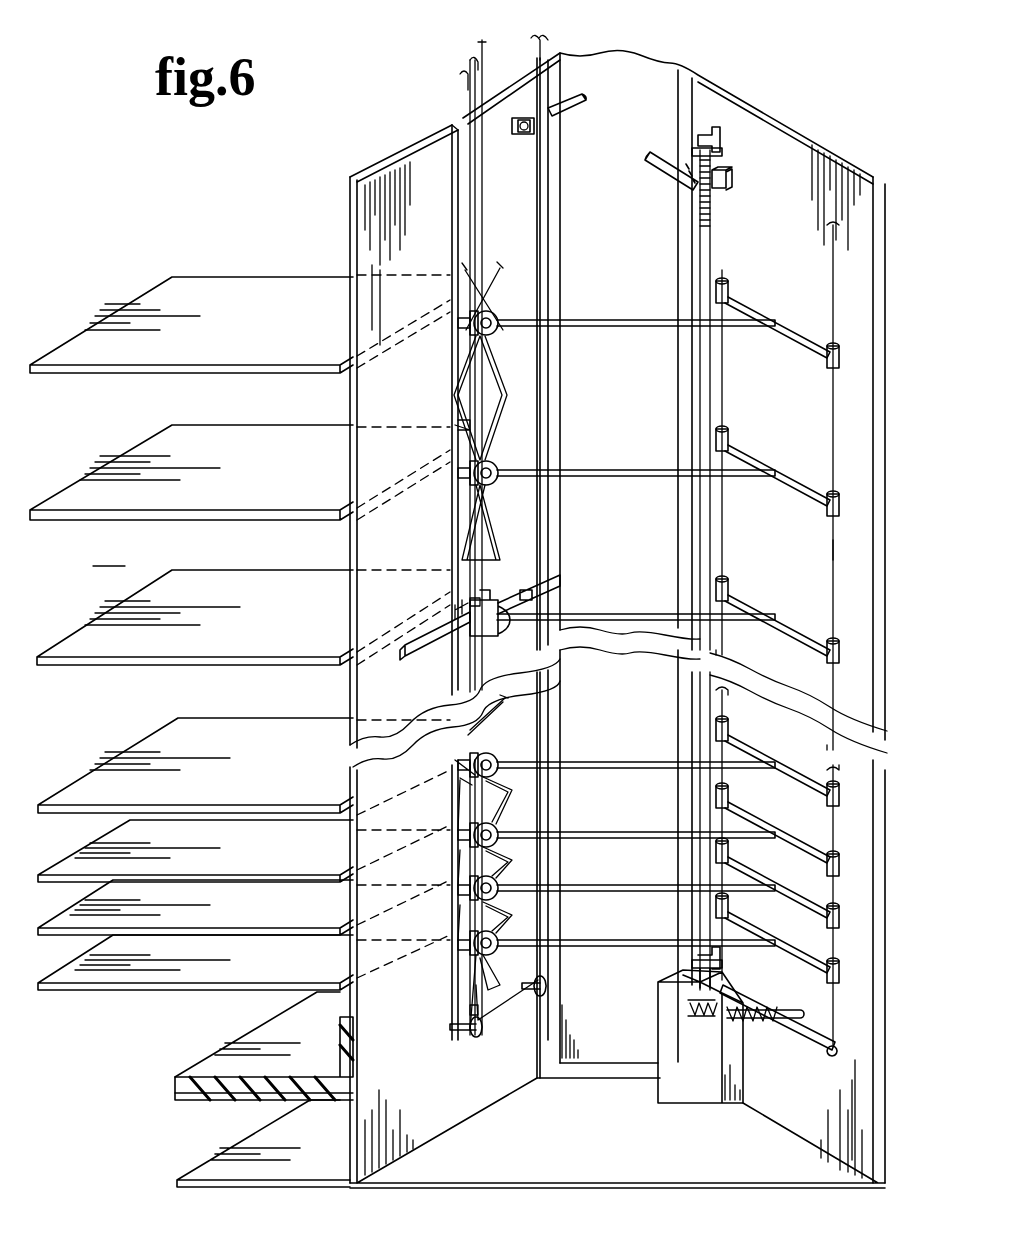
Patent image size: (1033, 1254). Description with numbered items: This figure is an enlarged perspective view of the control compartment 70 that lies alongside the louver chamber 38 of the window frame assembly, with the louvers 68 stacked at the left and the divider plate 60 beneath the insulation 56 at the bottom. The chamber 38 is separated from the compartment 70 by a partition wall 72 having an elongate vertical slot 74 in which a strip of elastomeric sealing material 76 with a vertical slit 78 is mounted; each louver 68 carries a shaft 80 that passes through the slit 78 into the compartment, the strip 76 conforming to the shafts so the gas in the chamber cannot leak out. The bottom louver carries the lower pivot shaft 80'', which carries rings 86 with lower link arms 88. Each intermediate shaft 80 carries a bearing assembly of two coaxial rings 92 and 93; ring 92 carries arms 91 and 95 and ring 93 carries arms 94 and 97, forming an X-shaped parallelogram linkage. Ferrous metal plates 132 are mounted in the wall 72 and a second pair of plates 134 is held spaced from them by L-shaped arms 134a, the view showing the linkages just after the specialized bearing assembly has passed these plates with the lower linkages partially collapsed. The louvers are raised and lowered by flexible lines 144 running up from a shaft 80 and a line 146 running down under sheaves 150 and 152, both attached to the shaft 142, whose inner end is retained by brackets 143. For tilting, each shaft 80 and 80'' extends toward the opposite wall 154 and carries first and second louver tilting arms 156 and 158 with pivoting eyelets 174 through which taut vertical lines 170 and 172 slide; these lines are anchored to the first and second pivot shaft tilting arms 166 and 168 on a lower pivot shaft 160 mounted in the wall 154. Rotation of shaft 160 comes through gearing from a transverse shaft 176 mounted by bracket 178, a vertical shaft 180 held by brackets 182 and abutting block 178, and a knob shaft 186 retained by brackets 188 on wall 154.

The chamber 38 is at (109, 556).
The insulation 56 is at (175, 1085).
The divider plate 60 is at (198, 1100).
The louvers 68 is at (180, 300).
The control compartment 70 is at (433, 1118).
The partition wall 72 is at (385, 165).
The vertical slot 74 is at (470, 163).
The elastomeric sealing strip 76 is at (480, 198).
The vertical slit 78 is at (486, 165).
The shaft 80 is at (636, 587).
The lower pivot shaft 80'' is at (636, 926).
The rings 86 is at (482, 965).
The lower link arm 88 is at (503, 918).
The louver link arm 91 is at (505, 408).
The ring 92 is at (492, 315).
The ring 93 is at (470, 333).
The louver link arm 94 is at (455, 430).
The louver link arm 95 is at (468, 490).
The louver link arm 97 is at (496, 482).
The ferrous metal plates 132 is at (450, 612).
The metal plates 134 is at (500, 580).
The L-shaped arm 134a is at (555, 582).
The shaft 142 is at (578, 105).
The brackets 143 is at (512, 124).
The flexible lines 144 is at (545, 40).
The flexible line 146 is at (470, 1012).
The sheave 150 is at (482, 1035).
The sheave 152 is at (556, 988).
The control compartment wall 154 is at (810, 150).
The first louver tilting arm 156 is at (788, 335).
The second louver tilting arm 158 is at (738, 310).
The lower pivot shaft 160 is at (810, 1002).
The first pivot shaft tilting arm 166 is at (826, 1052).
The second pivot shaft tilting arm 168 is at (755, 1008).
The vertical line 170 is at (833, 550).
The line 172 is at (722, 538).
The eyelet 174 is at (730, 448).
The transverse horizontal shaft 176 is at (760, 1030).
The bracket 178 is at (698, 1075).
The vertical shaft 180 is at (712, 236).
The brackets 182 is at (722, 152).
The shaft 186 is at (648, 172).
The brackets 188 is at (722, 183).